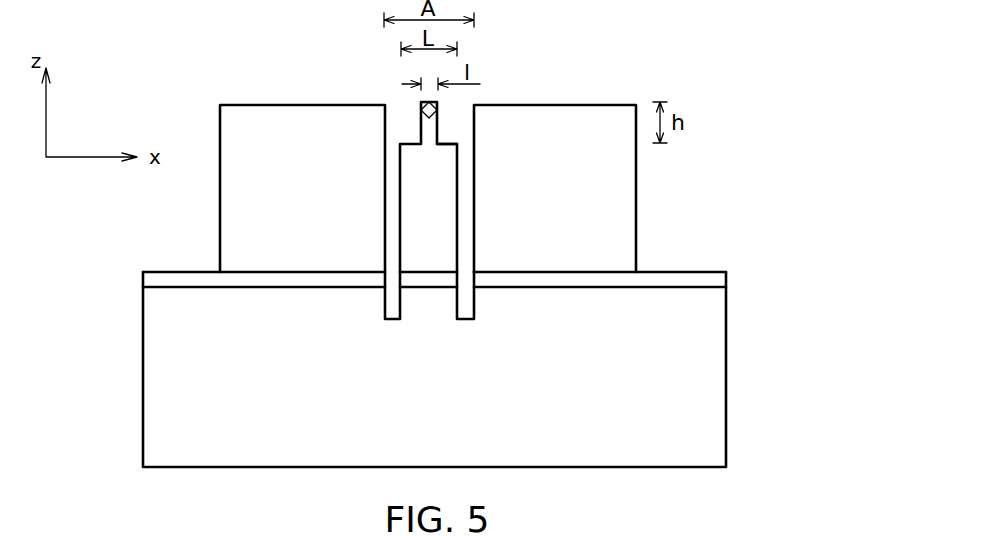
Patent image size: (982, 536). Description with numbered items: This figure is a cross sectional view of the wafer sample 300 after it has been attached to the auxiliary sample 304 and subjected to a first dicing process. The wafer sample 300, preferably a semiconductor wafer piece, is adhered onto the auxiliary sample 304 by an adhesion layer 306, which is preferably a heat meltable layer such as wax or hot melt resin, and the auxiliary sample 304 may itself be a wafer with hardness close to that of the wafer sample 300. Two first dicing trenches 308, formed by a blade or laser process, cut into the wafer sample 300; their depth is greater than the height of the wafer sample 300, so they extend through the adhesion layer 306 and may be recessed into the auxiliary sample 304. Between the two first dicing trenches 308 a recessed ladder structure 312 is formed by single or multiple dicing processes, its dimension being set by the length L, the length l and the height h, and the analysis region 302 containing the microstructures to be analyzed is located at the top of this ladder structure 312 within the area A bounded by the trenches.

The wafer sample 300 is at (623, 215).
The analysis region 302 is at (436, 103).
The auxiliary sample 304 is at (718, 345).
The adhesion layer 306 is at (712, 280).
The first dicing trench 308 is at (382, 85).
The ladder structure 312 is at (466, 128).